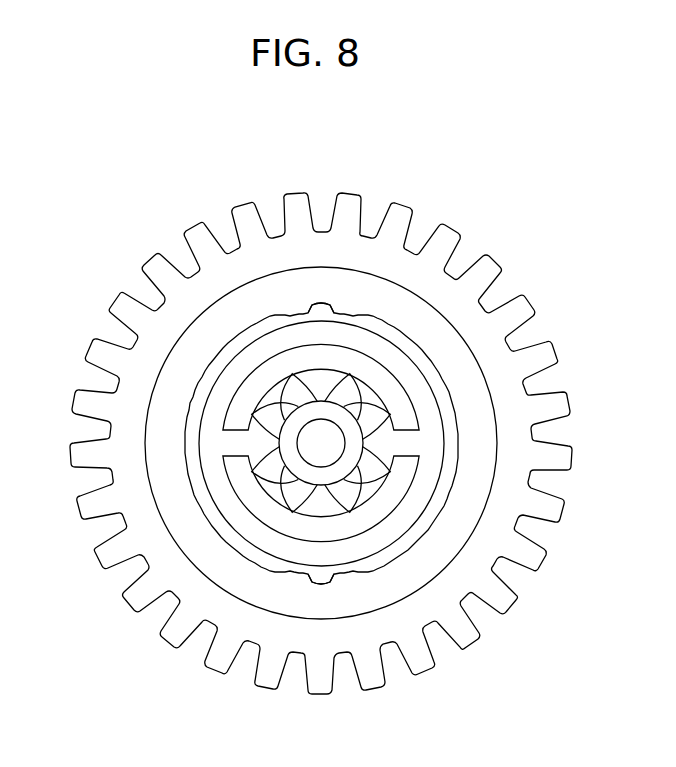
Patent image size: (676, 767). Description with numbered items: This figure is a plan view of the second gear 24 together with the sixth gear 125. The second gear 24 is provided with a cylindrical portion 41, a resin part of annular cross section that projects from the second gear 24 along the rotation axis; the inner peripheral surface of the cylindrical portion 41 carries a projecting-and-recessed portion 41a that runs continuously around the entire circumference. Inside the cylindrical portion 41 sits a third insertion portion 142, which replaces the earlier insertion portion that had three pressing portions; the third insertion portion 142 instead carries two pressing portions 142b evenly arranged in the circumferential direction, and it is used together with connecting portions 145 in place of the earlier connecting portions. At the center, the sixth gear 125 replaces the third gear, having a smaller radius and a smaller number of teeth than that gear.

The second gear 24 is at (345, 190).
The cylindrical portion 41 is at (394, 274).
The projecting-and-recessed portion 41a is at (425, 350).
The third insertion portion 142 is at (264, 564).
The pressing portions 142b is at (302, 316).
The connecting portions 145 is at (233, 412).
The sixth gear 125 is at (370, 473).